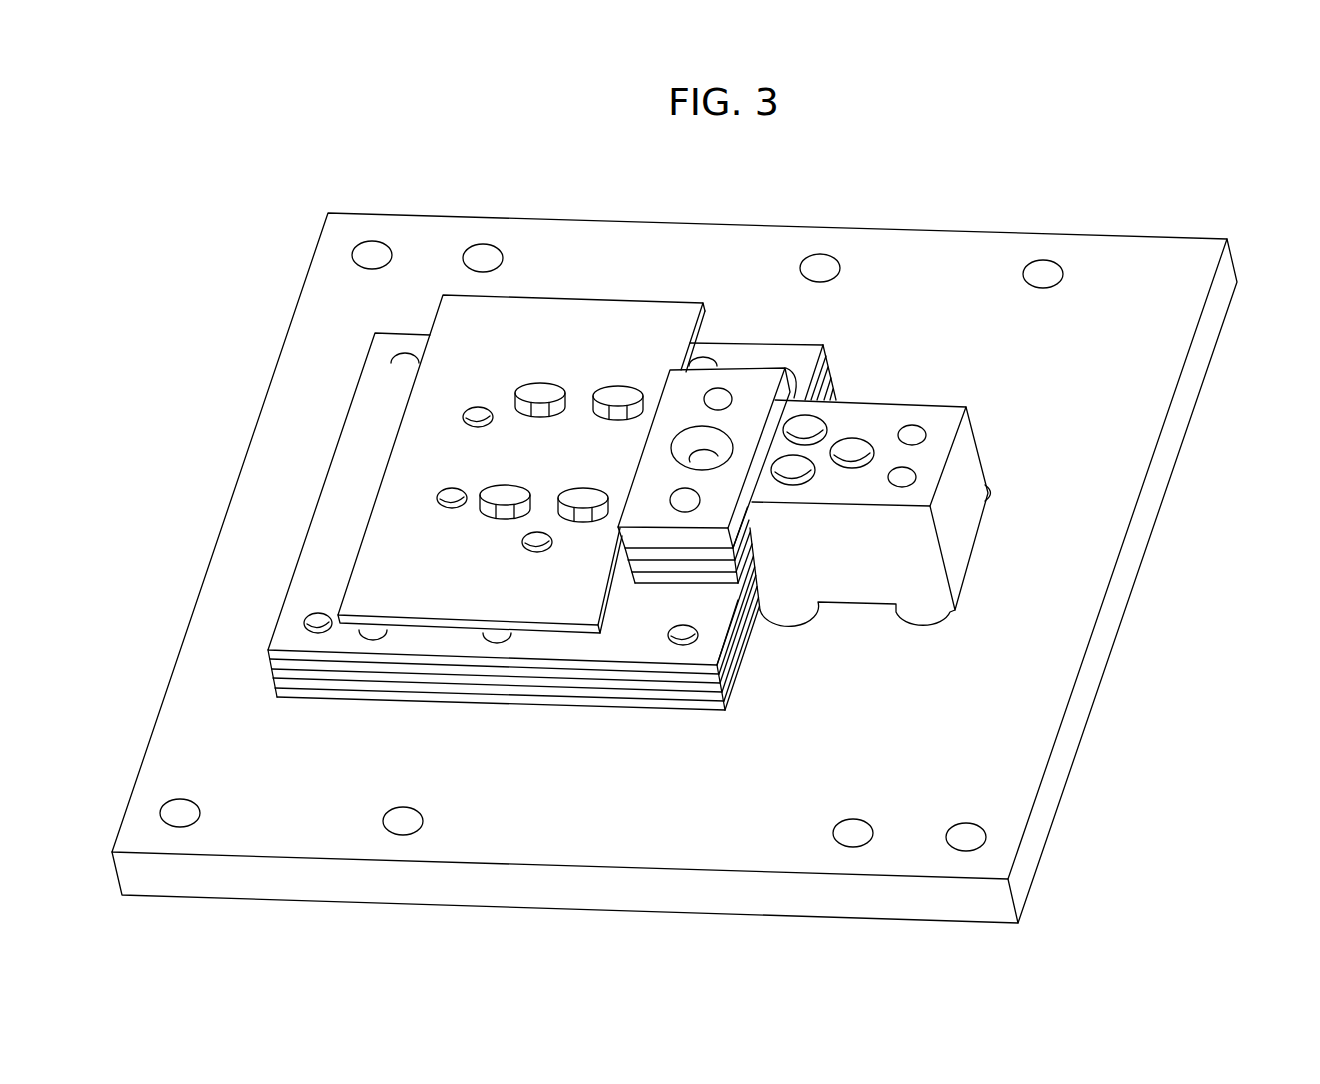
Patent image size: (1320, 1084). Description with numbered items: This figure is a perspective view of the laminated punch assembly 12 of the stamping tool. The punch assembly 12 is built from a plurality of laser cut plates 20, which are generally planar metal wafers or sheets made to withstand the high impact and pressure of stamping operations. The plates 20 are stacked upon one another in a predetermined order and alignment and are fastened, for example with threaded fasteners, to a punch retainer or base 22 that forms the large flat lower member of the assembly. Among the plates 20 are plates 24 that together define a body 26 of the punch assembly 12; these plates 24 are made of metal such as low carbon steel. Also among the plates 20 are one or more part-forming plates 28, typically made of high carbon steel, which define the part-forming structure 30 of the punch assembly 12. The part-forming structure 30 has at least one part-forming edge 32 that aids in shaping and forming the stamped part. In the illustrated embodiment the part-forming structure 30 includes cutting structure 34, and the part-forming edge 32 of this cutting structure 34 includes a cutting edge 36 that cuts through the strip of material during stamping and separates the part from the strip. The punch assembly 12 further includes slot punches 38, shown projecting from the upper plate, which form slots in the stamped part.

The punch assembly 12 is at (1066, 177).
The plates 20 is at (400, 497).
The punch retainer or base 22 is at (1193, 366).
The plates defining the body 24 is at (729, 595).
The body 26 is at (258, 713).
The part-forming plates 28 is at (750, 384).
The part-forming structure 30 is at (602, 531).
The part-forming edge 32 is at (635, 477).
The cutting structure 34 is at (685, 395).
The cutting edge 36 is at (650, 437).
The slot punches 38 is at (622, 398).